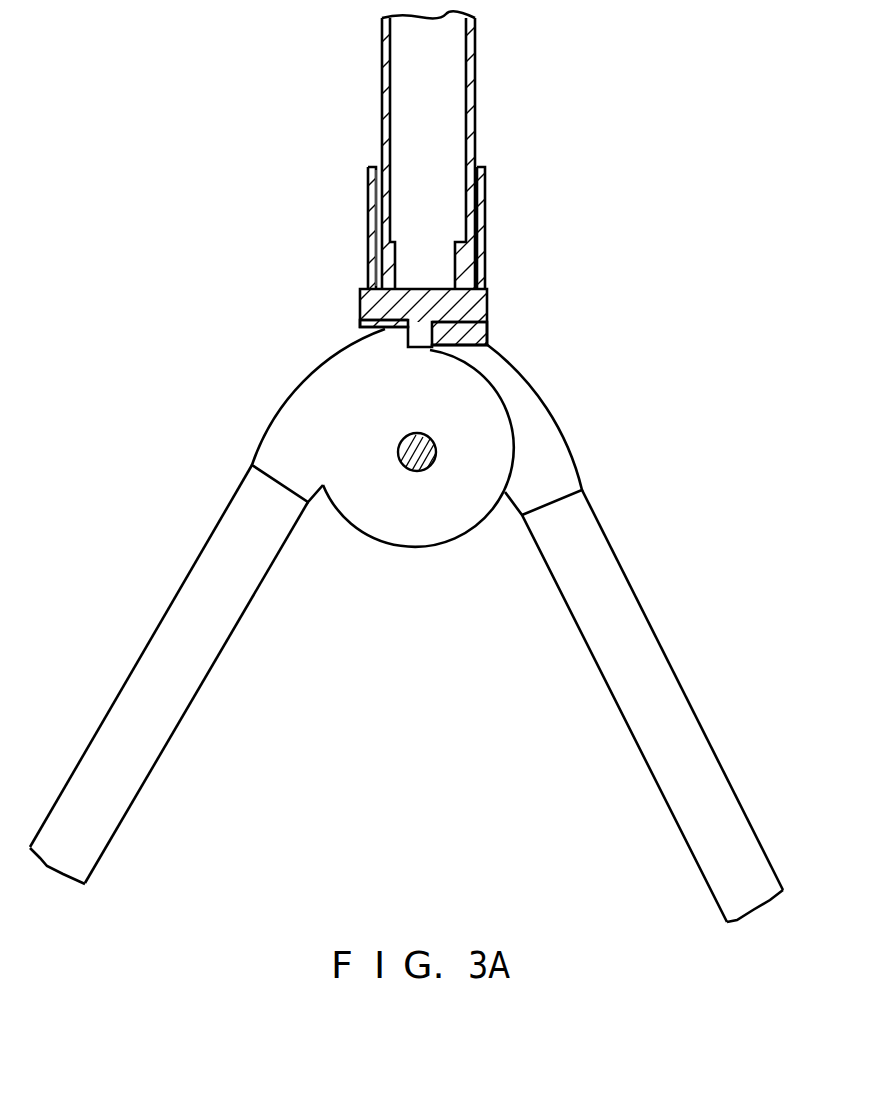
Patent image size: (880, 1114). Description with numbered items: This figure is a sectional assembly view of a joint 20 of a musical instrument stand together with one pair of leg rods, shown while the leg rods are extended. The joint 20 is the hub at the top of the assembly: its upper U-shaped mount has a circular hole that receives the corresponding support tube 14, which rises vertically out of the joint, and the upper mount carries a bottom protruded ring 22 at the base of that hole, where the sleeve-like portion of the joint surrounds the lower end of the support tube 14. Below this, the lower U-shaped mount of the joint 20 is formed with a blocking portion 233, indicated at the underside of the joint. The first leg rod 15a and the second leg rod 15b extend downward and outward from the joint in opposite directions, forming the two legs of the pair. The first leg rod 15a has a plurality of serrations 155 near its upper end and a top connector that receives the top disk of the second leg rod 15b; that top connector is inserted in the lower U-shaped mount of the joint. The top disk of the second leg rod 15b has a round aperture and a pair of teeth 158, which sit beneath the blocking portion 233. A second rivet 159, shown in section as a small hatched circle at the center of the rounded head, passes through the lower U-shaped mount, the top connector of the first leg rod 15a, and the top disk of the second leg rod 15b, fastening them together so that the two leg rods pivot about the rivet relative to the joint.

The support tube 14 is at (382, 68).
The joint 20 is at (492, 207).
The bottom protruded ring 22 is at (373, 240).
The serrations 155 is at (378, 326).
The teeth 158 is at (445, 335).
The blocking portion 233 is at (486, 343).
The second rivet 159 is at (412, 462).
The first leg rod 15a is at (142, 730).
The second leg rod 15b is at (617, 668).